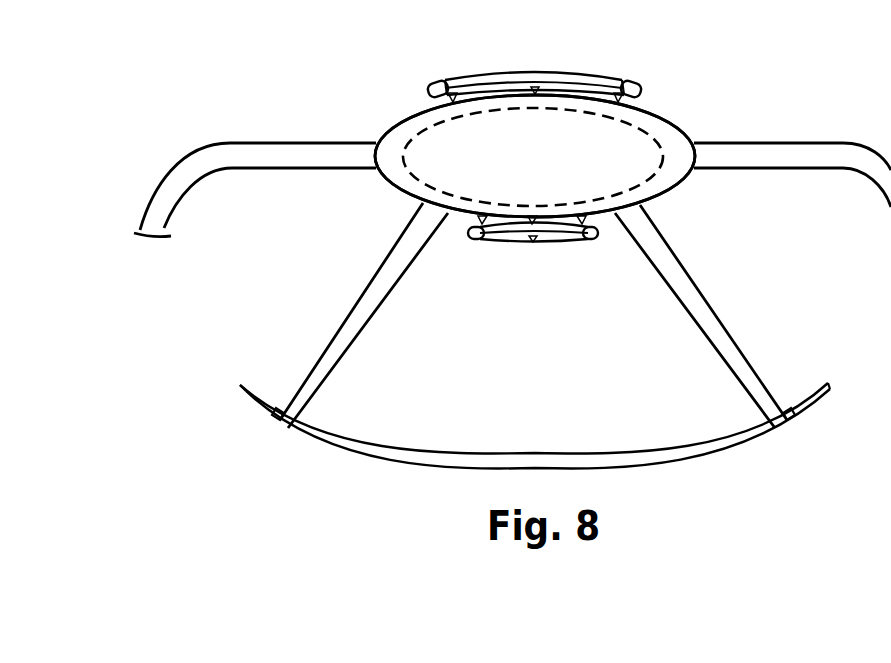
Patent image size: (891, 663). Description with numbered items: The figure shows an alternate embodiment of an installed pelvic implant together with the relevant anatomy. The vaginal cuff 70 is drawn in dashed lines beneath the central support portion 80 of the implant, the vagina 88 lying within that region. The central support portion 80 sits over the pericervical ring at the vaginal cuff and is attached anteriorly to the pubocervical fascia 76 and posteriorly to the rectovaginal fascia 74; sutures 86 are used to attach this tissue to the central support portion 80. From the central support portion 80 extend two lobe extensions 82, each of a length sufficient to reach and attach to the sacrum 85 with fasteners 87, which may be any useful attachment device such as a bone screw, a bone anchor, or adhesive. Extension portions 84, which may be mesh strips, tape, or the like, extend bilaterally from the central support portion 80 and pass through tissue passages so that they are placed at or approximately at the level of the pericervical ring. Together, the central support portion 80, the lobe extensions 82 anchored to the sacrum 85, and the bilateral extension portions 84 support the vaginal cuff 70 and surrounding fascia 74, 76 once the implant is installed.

The vaginal cuff 70 is at (663, 138).
The rectovaginal fascia 74 is at (566, 243).
The pubocervical fascia 76 is at (556, 78).
The central support portion 80 is at (403, 118).
The lobe extensions 82 is at (358, 329).
The extension portions 84 is at (214, 158).
The sacrum 85 is at (683, 458).
The sutures 86 is at (450, 88).
The fasteners 87 is at (275, 408).
The vagina 88 is at (524, 188).